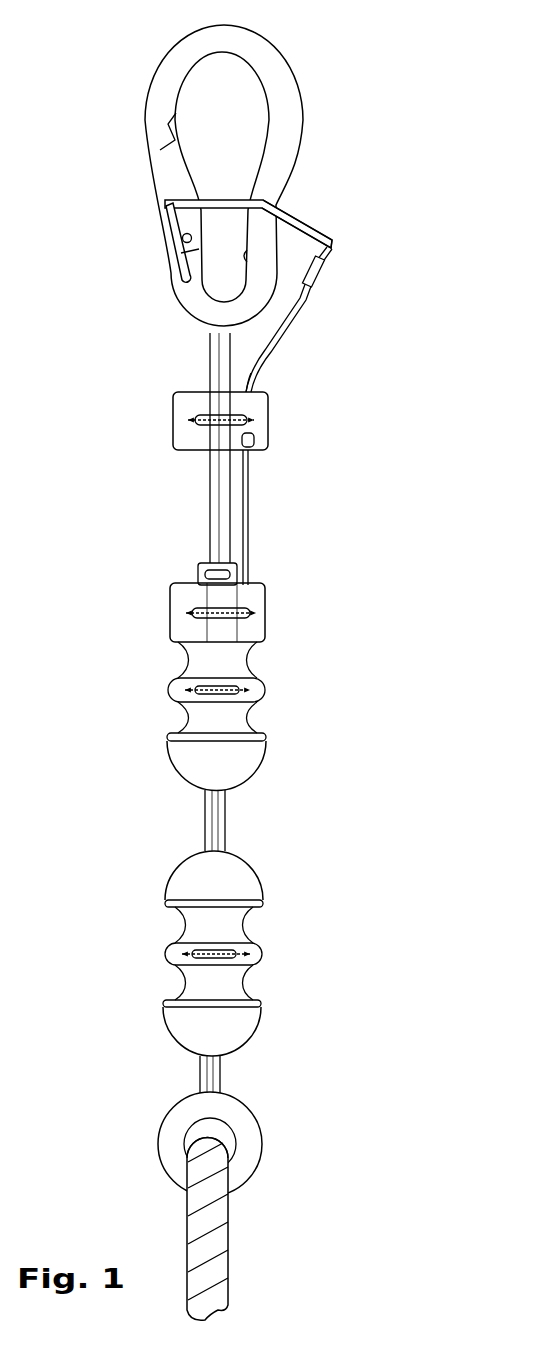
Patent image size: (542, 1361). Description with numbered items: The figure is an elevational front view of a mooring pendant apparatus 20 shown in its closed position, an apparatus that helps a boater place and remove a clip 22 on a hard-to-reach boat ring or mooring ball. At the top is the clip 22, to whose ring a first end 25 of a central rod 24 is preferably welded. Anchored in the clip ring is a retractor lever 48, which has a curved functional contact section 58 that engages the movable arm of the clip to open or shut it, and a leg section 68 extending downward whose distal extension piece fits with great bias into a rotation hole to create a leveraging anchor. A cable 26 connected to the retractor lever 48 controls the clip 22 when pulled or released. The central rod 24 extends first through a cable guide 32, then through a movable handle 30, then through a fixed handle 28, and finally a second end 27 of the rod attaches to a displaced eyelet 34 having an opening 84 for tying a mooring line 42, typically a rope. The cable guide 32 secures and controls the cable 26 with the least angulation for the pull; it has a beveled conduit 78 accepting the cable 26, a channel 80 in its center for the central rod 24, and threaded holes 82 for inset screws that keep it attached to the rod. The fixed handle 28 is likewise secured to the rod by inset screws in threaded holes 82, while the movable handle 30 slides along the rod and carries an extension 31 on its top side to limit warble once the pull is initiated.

The mooring pendant apparatus 20 is at (349, 84).
The clip 22 is at (297, 137).
The central rod 24 is at (208, 517).
The first end 25 is at (210, 333).
The cable 26 is at (251, 502).
The second end 27 is at (223, 1096).
The fixed handle 28 is at (258, 1022).
The movable handle 30 is at (267, 743).
The extension 31 is at (267, 612).
The cable guide 32 is at (270, 421).
The displaced eyelet 34 is at (262, 1150).
The mooring line 42 is at (229, 1258).
The retractor lever 48 is at (300, 219).
The functional contact section 58 is at (163, 203).
The leg section 68 is at (168, 240).
The beveled conduit 78 is at (253, 390).
The channel 80 is at (228, 394).
The threaded holes 82 is at (200, 613).
The opening 84 is at (210, 1141).